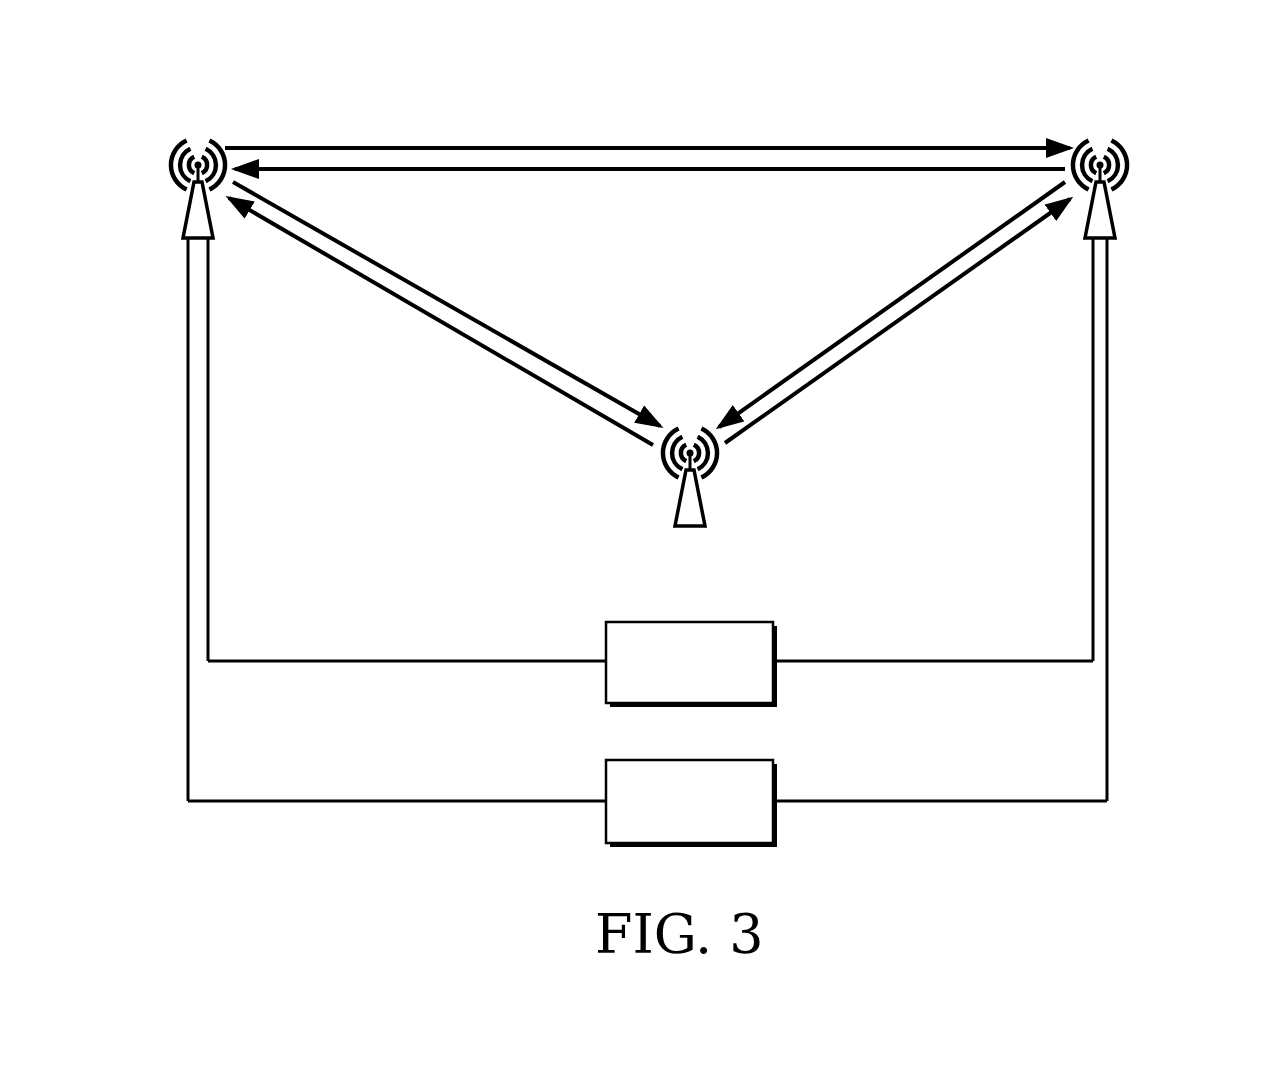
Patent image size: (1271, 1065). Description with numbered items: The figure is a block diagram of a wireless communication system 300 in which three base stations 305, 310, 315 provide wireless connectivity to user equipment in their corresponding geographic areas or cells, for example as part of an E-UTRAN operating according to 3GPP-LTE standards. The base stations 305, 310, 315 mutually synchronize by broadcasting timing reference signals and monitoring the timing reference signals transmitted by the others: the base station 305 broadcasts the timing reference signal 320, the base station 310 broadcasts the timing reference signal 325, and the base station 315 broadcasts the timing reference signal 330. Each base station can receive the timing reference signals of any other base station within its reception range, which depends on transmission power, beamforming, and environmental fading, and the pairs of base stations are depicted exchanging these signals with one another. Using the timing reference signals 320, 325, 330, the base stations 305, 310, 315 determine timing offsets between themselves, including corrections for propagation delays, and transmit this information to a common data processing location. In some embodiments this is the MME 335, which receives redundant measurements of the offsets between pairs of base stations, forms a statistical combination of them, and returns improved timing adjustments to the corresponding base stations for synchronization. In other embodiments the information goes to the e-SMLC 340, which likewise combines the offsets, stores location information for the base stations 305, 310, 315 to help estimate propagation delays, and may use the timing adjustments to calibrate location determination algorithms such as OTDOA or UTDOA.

The wireless communication system 300 is at (1167, 85).
The base station 305 is at (180, 225).
The base station 310 is at (670, 495).
The base station 315 is at (1118, 225).
The timing reference signal 320 is at (400, 147).
The timing reference signal 325 is at (545, 390).
The timing reference signal 330 is at (870, 171).
The MME 335 is at (603, 637).
The e-SMLC 340 is at (603, 772).